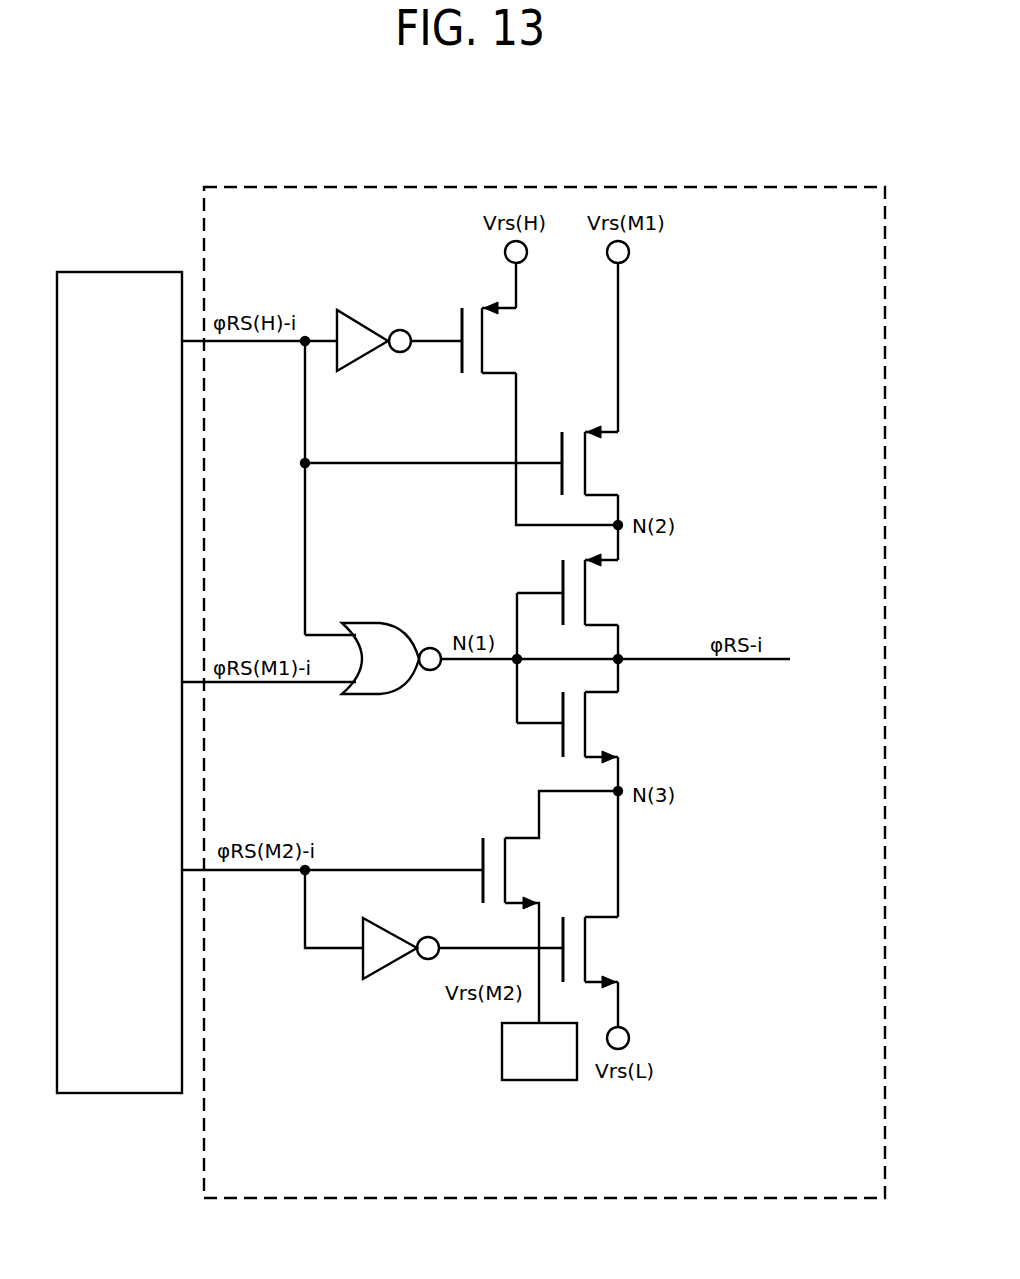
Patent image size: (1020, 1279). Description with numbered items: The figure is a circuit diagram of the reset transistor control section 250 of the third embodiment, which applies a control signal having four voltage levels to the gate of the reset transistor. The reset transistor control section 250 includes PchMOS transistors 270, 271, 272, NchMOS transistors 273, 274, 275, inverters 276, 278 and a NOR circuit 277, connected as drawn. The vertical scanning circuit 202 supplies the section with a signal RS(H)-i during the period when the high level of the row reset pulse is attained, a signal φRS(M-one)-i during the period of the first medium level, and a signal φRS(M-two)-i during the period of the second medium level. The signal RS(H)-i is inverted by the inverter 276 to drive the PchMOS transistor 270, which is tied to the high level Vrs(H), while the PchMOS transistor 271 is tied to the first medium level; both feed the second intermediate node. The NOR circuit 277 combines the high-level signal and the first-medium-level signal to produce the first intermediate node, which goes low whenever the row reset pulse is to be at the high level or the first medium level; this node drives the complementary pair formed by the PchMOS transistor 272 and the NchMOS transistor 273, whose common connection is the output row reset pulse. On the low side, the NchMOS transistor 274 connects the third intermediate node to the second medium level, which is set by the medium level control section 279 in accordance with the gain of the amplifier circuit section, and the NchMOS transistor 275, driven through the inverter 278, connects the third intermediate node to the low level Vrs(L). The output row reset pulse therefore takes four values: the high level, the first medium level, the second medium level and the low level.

The vertical scanning circuit 202 is at (113, 272).
The reset transistor control section 250 is at (710, 187).
The PchMOS transistor 270 is at (508, 347).
The PchMOS transistor 271 is at (612, 465).
The PchMOS transistor 272 is at (608, 600).
The NchMOS transistor 273 is at (608, 732).
The NchMOS transistor 274 is at (530, 874).
The NchMOS transistor 275 is at (610, 957).
The inverter 276 is at (362, 358).
The NOR circuit 277 is at (375, 695).
The inverter 278 is at (390, 965).
The medium level control section 279 is at (502, 1068).